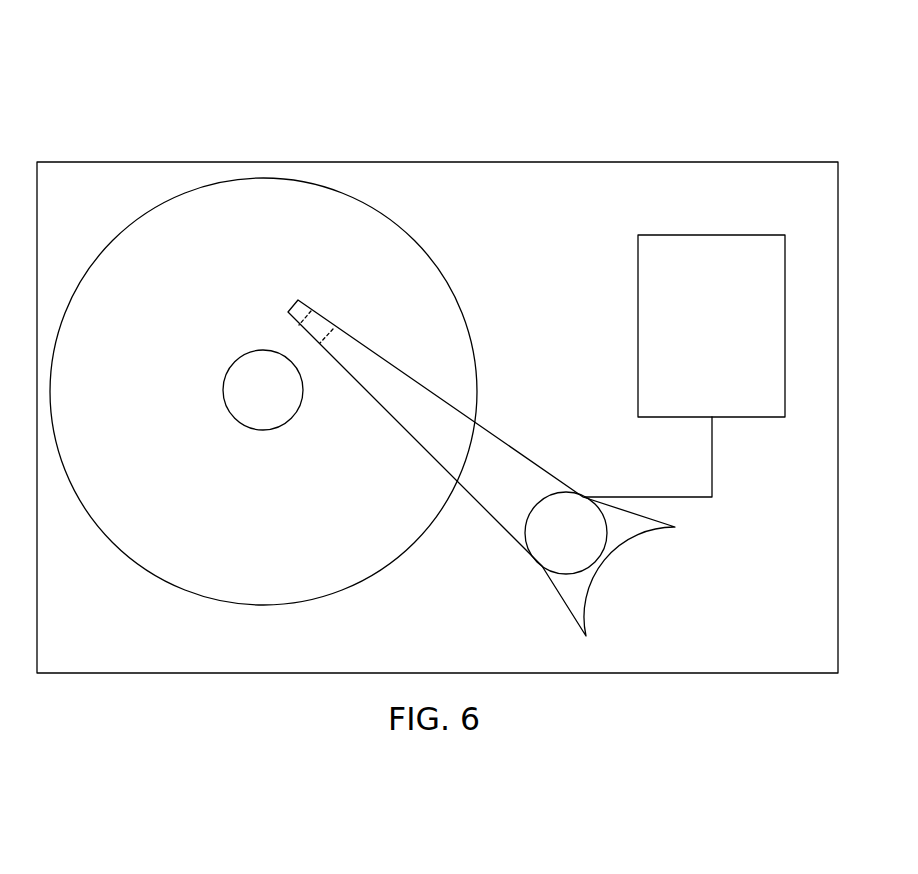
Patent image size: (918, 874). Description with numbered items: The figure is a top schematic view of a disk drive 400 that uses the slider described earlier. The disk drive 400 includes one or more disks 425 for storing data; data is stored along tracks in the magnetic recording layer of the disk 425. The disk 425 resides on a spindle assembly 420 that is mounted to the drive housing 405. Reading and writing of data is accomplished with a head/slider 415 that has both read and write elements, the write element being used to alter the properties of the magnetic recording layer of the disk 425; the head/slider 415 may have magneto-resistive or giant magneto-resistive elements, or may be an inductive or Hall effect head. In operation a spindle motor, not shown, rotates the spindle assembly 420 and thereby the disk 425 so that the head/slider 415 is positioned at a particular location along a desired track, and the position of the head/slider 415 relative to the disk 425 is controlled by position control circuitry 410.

The disk drive 400 is at (677, 101).
The drive housing 405 is at (523, 162).
The position control circuitry 410 is at (733, 341).
The head/slider 415 is at (323, 313).
The spindle assembly 420 is at (285, 404).
The disk 425 is at (128, 550).